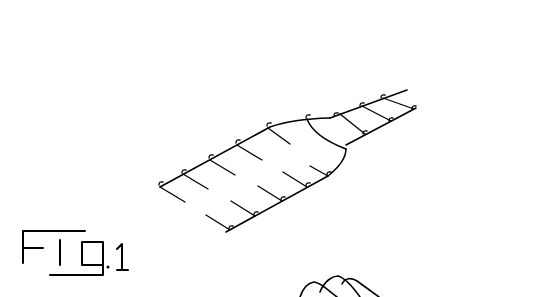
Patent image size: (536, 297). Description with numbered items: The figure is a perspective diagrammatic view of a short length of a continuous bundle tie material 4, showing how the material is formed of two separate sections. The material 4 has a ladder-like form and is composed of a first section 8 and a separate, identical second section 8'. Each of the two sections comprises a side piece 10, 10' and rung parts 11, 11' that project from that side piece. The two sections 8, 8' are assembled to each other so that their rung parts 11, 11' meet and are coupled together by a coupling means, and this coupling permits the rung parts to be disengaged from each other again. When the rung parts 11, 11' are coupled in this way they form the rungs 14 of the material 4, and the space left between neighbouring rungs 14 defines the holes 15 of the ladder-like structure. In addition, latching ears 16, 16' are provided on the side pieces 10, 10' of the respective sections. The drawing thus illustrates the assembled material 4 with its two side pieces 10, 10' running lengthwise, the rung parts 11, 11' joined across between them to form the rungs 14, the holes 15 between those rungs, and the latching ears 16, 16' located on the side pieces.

The first section 8 is at (217, 154).
The second section 8' is at (277, 236).
The side piece 10 is at (248, 141).
The side piece 10' is at (298, 208).
The rung parts 11 is at (225, 135).
The rung parts 11' is at (318, 198).
The latching ears 16 is at (325, 98).
The latching ears 16' is at (370, 164).
The continuous bundle tie material 4 is at (407, 83).
The rungs 14 is at (407, 90).
The holes 15 is at (380, 126).